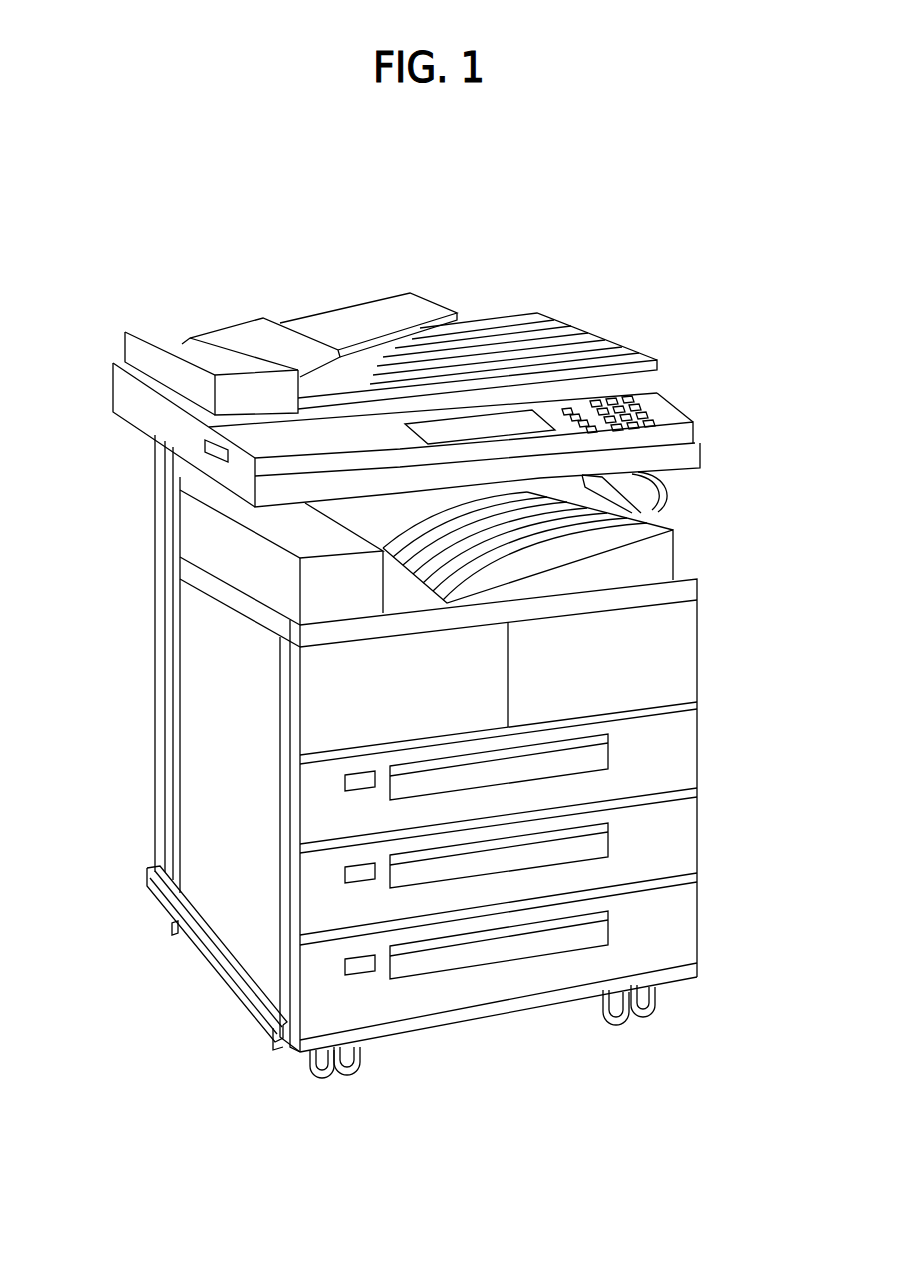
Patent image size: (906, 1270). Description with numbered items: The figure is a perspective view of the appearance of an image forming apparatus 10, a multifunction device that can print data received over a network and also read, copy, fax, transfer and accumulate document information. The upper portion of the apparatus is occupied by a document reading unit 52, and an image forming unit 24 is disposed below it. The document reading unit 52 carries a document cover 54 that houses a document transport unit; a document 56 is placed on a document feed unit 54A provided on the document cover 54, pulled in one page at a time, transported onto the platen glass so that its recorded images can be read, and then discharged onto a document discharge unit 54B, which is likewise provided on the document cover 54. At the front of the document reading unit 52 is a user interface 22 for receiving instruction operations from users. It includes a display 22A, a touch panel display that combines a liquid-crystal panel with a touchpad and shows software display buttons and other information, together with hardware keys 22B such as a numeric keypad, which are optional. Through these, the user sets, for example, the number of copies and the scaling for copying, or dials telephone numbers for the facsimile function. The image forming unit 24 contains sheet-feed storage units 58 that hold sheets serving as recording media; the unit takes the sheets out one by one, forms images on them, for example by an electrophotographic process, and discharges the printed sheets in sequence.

The image forming apparatus 10 is at (542, 198).
The user interface 22 is at (688, 396).
The display 22A is at (418, 426).
The hardware keys 22B is at (658, 362).
The image forming unit 24 is at (212, 896).
The document reading unit 52 is at (125, 393).
The document cover 54 is at (132, 348).
The document feed unit 54A is at (395, 307).
The document discharge unit 54B is at (490, 318).
The document 56 is at (235, 342).
The sheet-feed storage units 58 is at (685, 751).